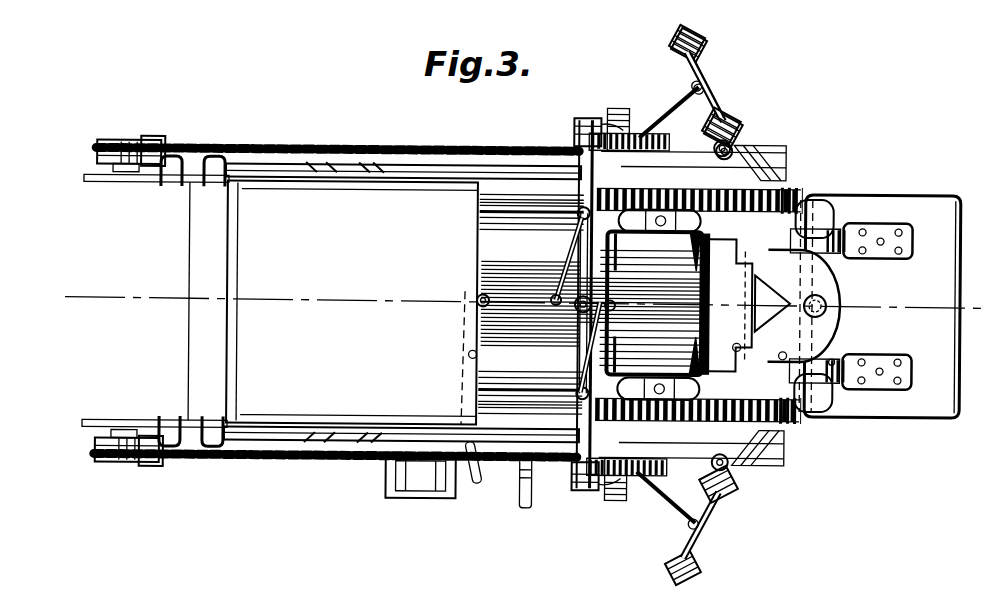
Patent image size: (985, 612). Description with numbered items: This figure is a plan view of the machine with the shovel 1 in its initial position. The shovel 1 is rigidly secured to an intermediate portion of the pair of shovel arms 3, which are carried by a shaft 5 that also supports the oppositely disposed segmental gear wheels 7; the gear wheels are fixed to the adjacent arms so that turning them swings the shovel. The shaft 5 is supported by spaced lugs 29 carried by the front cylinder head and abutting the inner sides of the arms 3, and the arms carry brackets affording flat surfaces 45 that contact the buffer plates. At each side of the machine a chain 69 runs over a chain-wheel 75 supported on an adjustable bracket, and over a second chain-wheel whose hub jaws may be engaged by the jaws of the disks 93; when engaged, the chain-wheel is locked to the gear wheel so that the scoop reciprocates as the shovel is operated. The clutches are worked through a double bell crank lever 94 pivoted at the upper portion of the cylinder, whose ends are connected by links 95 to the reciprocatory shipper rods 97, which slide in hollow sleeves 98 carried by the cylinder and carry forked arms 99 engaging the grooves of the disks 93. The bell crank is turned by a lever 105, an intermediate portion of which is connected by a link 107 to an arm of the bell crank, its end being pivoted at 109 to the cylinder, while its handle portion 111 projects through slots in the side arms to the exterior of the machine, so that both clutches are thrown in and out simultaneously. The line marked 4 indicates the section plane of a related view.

The shovel 1 is at (950, 263).
The shovel arms 3 is at (852, 252).
The section line 4- 4 is at (65, 299).
The shaft 5 is at (730, 293).
The segmental gear wheels 7 is at (792, 191).
The spaced lugs 29 is at (790, 256).
The flat surfaces 45 is at (820, 210).
The chain 69 is at (404, 136).
The chain-wheel 75 is at (114, 144).
The disks 93 is at (634, 131).
The double bell crank lever 94 is at (608, 300).
The links 95 is at (568, 256).
The shipper rods 97 is at (574, 131).
The hollow sleeves 98 is at (577, 200).
The forked arms 99 is at (588, 116).
The lever 105 is at (466, 395).
The link 107 is at (512, 354).
The pivot 109 is at (478, 296).
The handle portion 111 is at (466, 484).